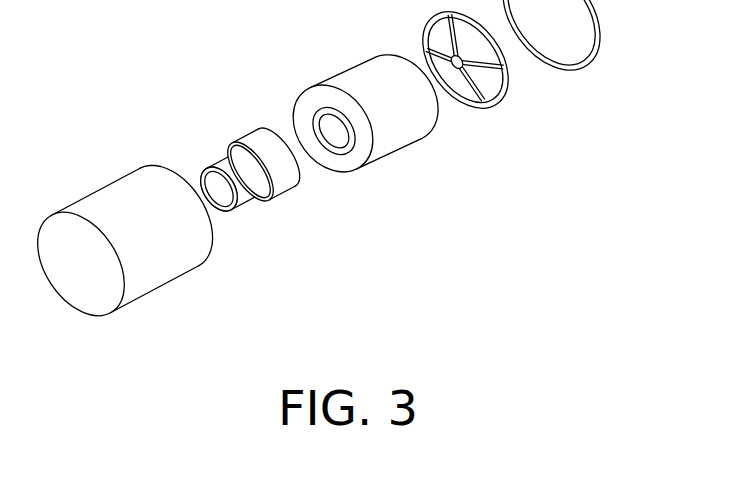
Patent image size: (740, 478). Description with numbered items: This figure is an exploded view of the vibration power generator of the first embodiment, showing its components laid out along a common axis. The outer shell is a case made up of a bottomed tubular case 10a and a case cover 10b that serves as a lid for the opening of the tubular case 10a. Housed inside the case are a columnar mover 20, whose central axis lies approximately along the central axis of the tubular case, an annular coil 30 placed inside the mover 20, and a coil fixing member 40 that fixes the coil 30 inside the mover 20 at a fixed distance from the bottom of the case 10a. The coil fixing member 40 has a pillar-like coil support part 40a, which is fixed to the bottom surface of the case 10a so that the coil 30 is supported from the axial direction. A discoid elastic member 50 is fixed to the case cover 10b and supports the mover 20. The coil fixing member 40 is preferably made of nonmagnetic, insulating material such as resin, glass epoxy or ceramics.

The bottomed tubular case 10a is at (157, 290).
The case cover 10b is at (596, 62).
The columnar mover 20 is at (400, 149).
The annular coil 30 is at (287, 182).
The coil fixing member 40 is at (273, 194).
The coil support part 40a is at (214, 166).
The discoid elastic member 50 is at (497, 107).